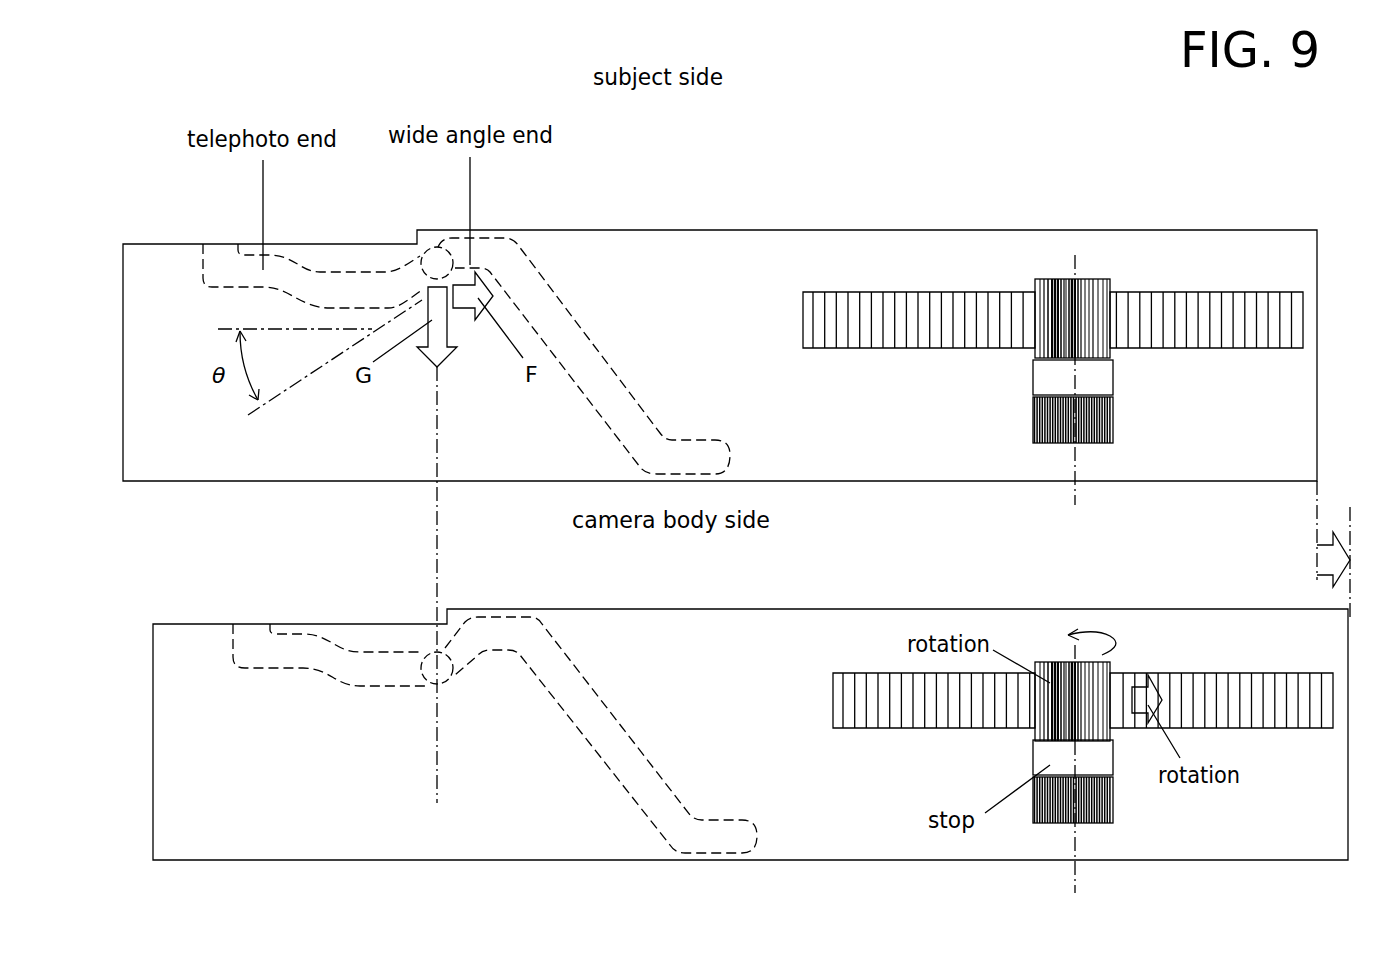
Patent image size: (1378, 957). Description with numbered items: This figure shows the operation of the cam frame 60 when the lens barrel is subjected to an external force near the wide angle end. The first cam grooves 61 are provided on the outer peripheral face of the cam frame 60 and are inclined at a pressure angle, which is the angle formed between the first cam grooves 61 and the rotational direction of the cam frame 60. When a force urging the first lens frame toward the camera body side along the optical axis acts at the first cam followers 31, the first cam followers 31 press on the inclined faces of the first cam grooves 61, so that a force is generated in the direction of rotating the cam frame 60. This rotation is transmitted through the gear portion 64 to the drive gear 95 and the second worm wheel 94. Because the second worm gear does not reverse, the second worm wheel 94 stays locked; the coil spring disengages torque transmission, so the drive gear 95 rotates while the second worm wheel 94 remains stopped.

The first cam follower 31 is at (427, 255).
The cam frame 60 is at (740, 290).
The first cam groove 61 is at (525, 292).
The gear portion 64 is at (900, 291).
The second worm wheel 94 is at (1105, 440).
The drive gear 95 is at (1090, 282).